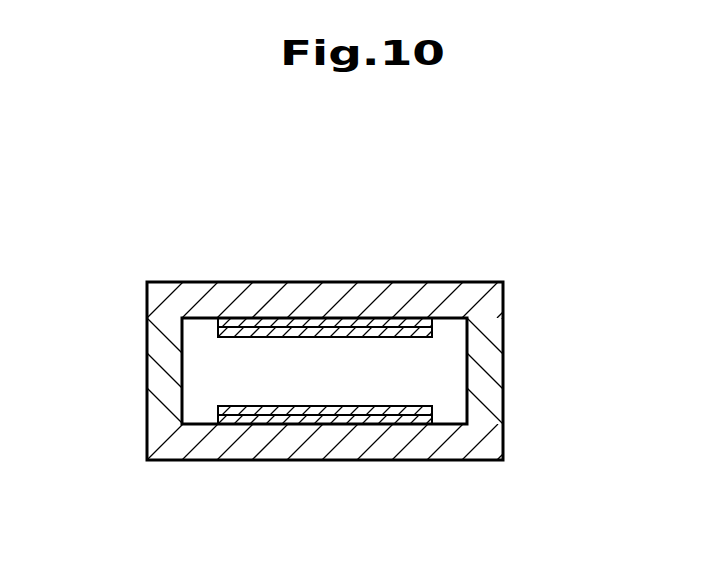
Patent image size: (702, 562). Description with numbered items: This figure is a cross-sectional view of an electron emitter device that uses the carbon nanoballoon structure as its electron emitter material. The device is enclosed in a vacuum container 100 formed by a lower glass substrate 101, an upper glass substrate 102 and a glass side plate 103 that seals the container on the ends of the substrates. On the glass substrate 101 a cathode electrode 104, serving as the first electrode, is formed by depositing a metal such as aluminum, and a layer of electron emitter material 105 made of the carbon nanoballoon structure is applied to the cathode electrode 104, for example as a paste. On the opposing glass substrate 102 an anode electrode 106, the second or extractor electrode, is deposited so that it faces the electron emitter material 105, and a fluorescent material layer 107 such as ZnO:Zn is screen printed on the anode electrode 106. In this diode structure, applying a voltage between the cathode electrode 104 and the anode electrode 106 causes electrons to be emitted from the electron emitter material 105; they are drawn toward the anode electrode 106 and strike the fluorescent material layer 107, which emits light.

The vacuum container 100 is at (478, 277).
The glass substrate 101 is at (201, 453).
The glass substrate 102 is at (197, 290).
The glass side plate 103 is at (157, 383).
The cathode electrode 104 is at (267, 417).
The electron emitter material 105 is at (350, 417).
The anode electrode 106 is at (284, 332).
The fluorescent material layer 107 is at (350, 333).